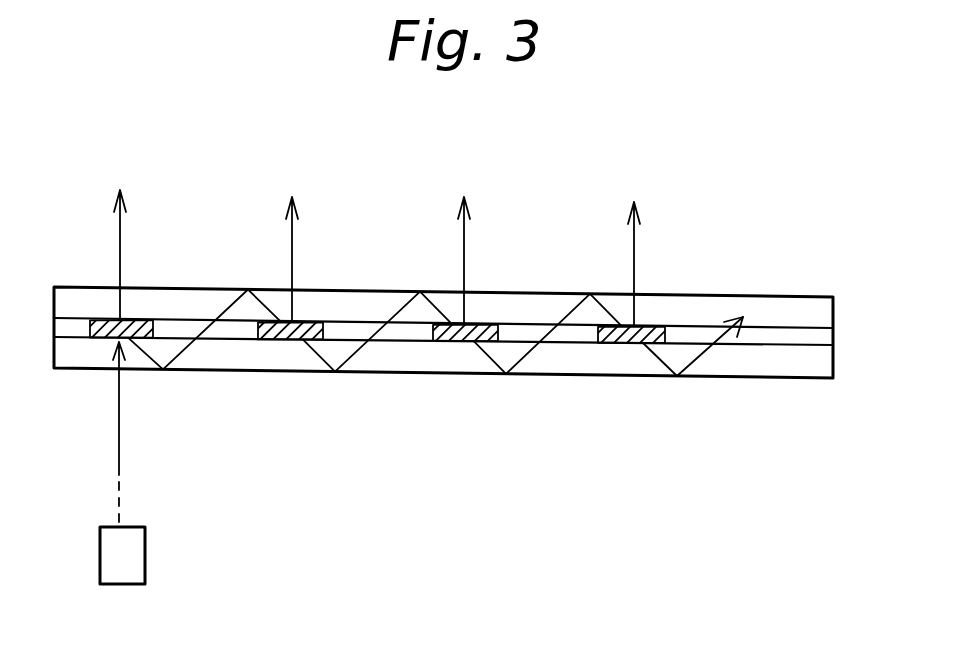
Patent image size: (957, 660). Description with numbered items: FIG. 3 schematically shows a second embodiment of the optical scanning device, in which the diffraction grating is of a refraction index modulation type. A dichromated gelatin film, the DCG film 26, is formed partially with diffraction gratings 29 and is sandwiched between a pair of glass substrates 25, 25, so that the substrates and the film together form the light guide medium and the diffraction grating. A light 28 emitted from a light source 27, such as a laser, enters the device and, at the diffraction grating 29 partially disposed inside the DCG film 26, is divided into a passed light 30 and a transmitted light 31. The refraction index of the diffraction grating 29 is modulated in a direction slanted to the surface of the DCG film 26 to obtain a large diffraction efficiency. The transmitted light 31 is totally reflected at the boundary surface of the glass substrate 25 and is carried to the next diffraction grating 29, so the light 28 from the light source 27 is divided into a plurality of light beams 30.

The glass substrate 25 is at (822, 312).
The DCG film 26 is at (777, 338).
The light source 27 is at (133, 568).
The light 28 is at (119, 445).
The diffraction grating 29 is at (108, 323).
The passed light 30 is at (120, 230).
The transmitted light 31 is at (190, 343).